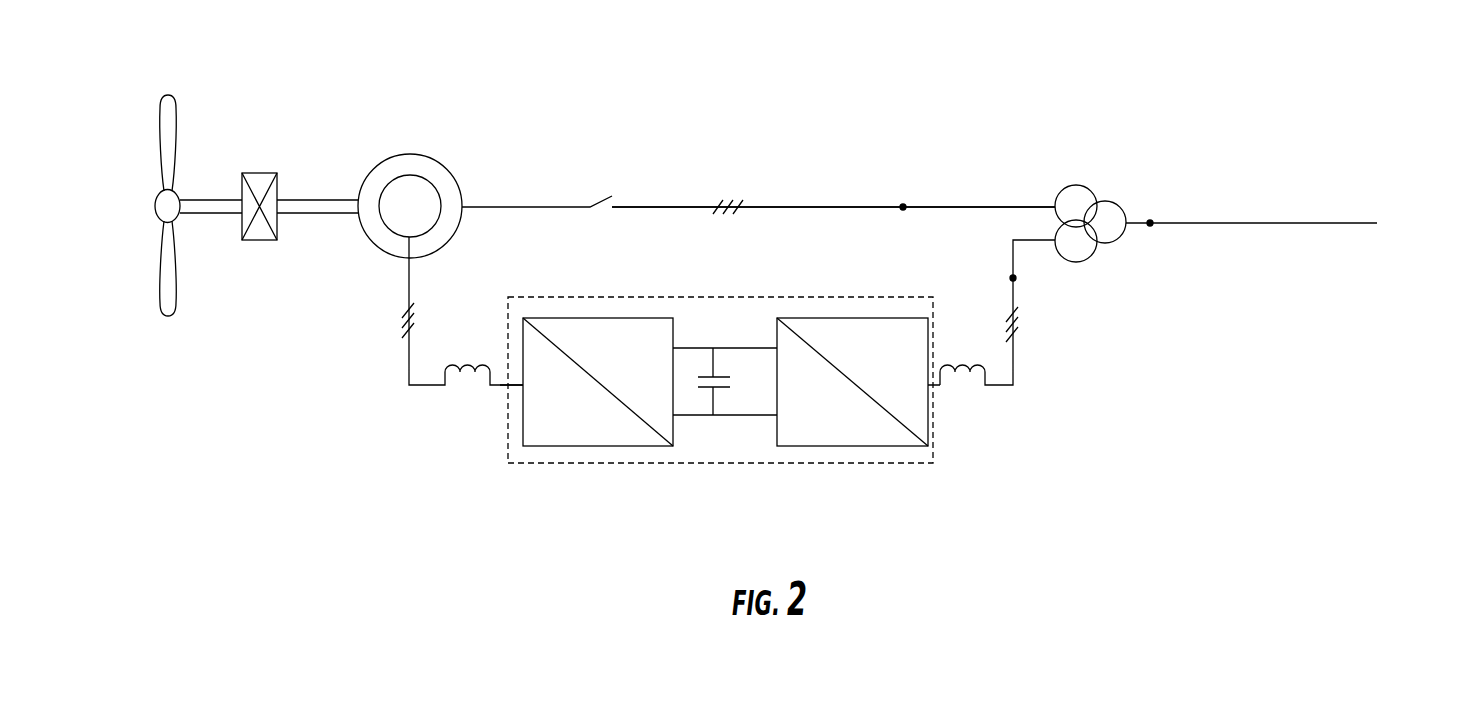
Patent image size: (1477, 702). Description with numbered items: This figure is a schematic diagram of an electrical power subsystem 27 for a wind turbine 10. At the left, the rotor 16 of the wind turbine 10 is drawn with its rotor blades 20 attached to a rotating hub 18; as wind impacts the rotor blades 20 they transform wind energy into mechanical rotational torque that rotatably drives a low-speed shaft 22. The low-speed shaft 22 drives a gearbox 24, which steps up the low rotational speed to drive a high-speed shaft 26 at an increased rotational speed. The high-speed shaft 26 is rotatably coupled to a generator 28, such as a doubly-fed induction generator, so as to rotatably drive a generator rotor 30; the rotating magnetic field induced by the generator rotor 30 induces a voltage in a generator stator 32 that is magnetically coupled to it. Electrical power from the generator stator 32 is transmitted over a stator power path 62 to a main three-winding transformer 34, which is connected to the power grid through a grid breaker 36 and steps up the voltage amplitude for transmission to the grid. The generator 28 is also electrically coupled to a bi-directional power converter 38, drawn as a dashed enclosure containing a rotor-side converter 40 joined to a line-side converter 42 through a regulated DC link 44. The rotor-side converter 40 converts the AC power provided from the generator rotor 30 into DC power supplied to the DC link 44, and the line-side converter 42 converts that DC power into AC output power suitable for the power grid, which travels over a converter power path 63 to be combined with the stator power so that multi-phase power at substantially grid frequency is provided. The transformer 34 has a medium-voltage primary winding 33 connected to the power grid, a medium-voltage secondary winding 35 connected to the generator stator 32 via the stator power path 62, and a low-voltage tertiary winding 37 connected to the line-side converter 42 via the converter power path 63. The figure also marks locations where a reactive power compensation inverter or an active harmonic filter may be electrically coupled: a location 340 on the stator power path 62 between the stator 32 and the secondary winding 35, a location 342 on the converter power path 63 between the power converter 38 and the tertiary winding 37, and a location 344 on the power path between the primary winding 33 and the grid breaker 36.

The wind turbine 10 is at (172, 70).
The rotor 16 is at (143, 213).
The rotating hub 18 is at (156, 212).
The rotor blades 20 is at (172, 128).
The low-speed shaft 22 is at (195, 214).
The gearbox 24 is at (253, 173).
The high-speed shaft 26 is at (293, 214).
The generator 28 is at (408, 152).
The generator rotor 30 is at (435, 182).
The generator stator 32 is at (393, 255).
The electrical power subsystem 27 is at (762, 150).
The stator power path 62 is at (818, 207).
The location 340 is at (900, 202).
The bi-directional power converter 38 is at (745, 293).
The rotor-side converter 40 is at (582, 447).
The line-side converter 42 is at (867, 447).
The regulated DC link 44 is at (731, 399).
The converter power path 63 is at (1013, 367).
The location 342 is at (1017, 284).
The main three-winding transformer 34 is at (1103, 157).
The secondary winding 35 is at (1055, 197).
The primary winding 33 is at (1112, 247).
The tertiary winding 37 is at (1083, 262).
The grid breaker 36 is at (1183, 222).
The location 344 is at (1154, 228).